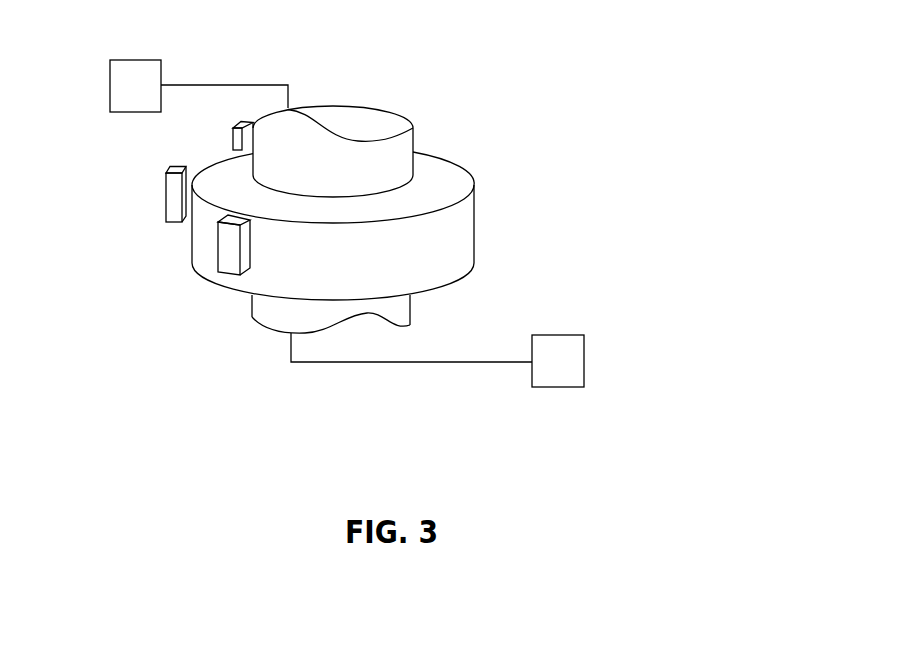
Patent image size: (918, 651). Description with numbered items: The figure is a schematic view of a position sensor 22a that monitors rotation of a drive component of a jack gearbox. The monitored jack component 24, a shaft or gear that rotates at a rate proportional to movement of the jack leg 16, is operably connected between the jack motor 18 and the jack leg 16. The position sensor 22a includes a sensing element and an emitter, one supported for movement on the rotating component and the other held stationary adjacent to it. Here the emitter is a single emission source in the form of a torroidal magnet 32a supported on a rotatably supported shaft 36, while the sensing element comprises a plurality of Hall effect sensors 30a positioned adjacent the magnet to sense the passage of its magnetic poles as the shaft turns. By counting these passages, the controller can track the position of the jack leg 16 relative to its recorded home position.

The jack leg 16 is at (565, 377).
The jack motor 18 is at (127, 72).
The position sensor 22a is at (620, 96).
The monitored jack component 24 is at (287, 252).
The Hall effect sensors 30a is at (233, 128).
The torroidal magnet 32a is at (465, 217).
The rotatably supported shaft 36 is at (260, 313).